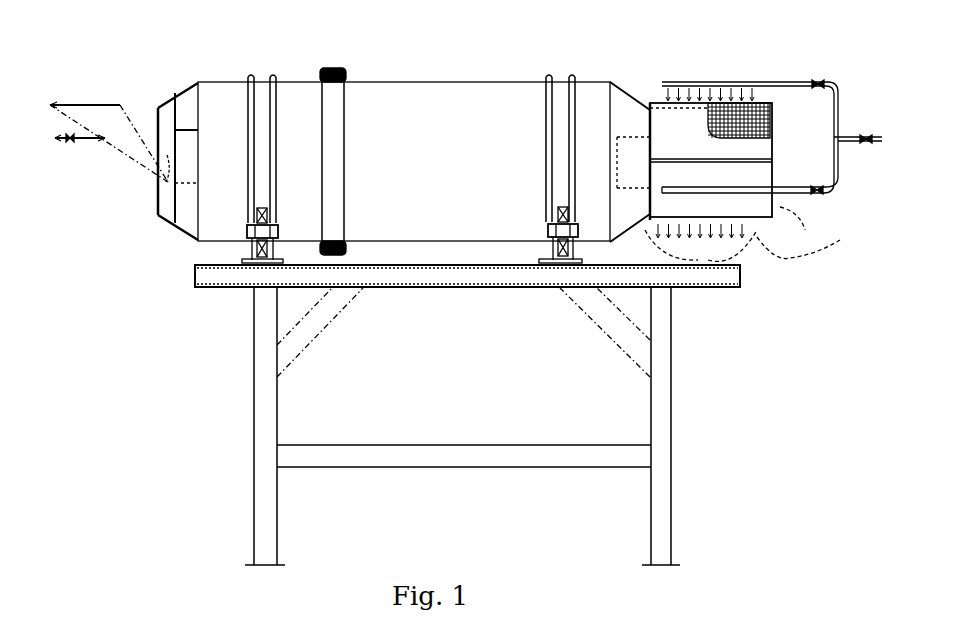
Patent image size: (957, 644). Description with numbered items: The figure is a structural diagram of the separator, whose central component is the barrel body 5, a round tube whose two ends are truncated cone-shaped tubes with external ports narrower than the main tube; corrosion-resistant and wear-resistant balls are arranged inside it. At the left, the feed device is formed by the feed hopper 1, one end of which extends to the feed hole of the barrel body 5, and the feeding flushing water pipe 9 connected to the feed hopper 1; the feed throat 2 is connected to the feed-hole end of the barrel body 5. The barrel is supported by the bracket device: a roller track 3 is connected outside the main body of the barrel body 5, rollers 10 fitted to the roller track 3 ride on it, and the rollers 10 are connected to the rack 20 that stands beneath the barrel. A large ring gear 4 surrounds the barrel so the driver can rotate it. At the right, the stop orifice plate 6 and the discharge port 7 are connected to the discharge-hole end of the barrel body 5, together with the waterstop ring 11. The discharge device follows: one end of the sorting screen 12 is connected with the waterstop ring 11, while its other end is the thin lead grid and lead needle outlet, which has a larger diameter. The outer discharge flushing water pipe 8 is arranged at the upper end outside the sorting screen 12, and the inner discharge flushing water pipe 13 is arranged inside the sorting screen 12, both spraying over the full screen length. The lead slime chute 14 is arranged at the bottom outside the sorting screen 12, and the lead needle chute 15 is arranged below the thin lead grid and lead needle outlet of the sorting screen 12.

The feed hopper 1 is at (108, 118).
The feed throat 2 is at (187, 112).
The roller track 3 is at (260, 93).
The large ring gear 4 is at (320, 80).
The barrel body 5 is at (427, 105).
The stop orifice plate 6 is at (585, 227).
The discharge port 7 is at (620, 108).
The outer discharge flushing water pipe 8 is at (695, 82).
The feeding flushing water pipe 9 is at (93, 133).
The roller 10 is at (250, 262).
The waterstop ring 11 is at (651, 126).
The sorting screen 12 is at (730, 112).
The inner discharge flushing water pipe 13 is at (740, 190).
The lead slime chute 14 is at (728, 250).
The lead needle chute 15 is at (781, 253).
The rack 20 is at (263, 417).